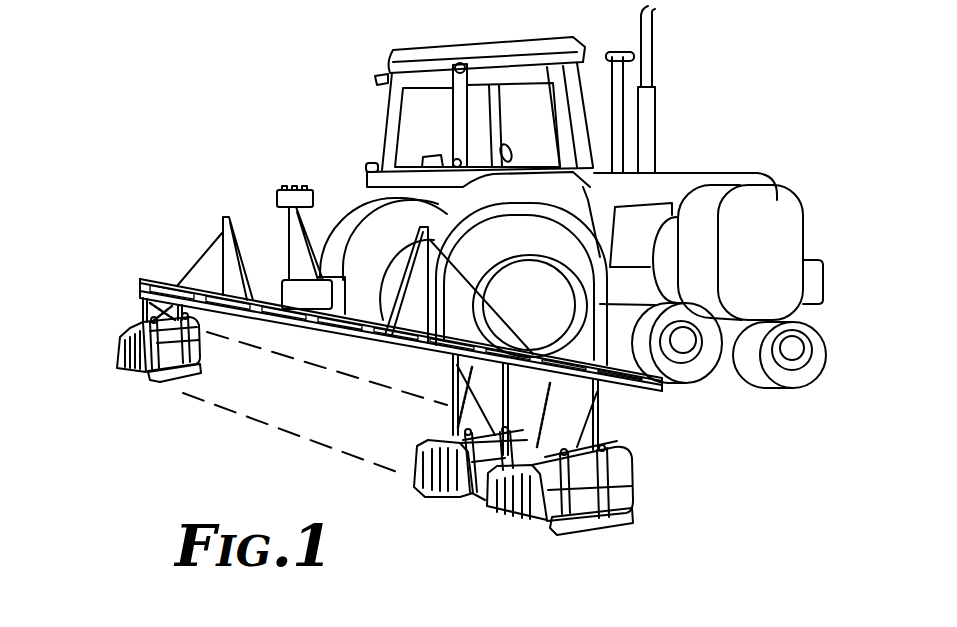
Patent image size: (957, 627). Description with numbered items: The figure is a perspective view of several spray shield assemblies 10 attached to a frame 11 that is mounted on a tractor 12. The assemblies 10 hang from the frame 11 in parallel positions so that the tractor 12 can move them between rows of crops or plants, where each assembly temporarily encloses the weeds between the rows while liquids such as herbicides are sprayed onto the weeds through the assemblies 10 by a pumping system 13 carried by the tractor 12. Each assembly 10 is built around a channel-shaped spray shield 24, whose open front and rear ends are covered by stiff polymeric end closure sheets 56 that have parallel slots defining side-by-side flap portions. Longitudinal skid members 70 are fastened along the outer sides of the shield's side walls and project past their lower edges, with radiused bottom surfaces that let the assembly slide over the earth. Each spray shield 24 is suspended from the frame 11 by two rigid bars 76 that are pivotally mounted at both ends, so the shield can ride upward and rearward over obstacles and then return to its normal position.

The spray shield assembly 10 is at (118, 380).
The frame 11 is at (650, 388).
The tractor 12 is at (723, 172).
The pumping system 13 is at (782, 218).
The spray shield 24 is at (157, 383).
The end closure sheets 56 is at (115, 365).
The skid members 70 is at (195, 374).
The rigid bars 76 is at (452, 385).